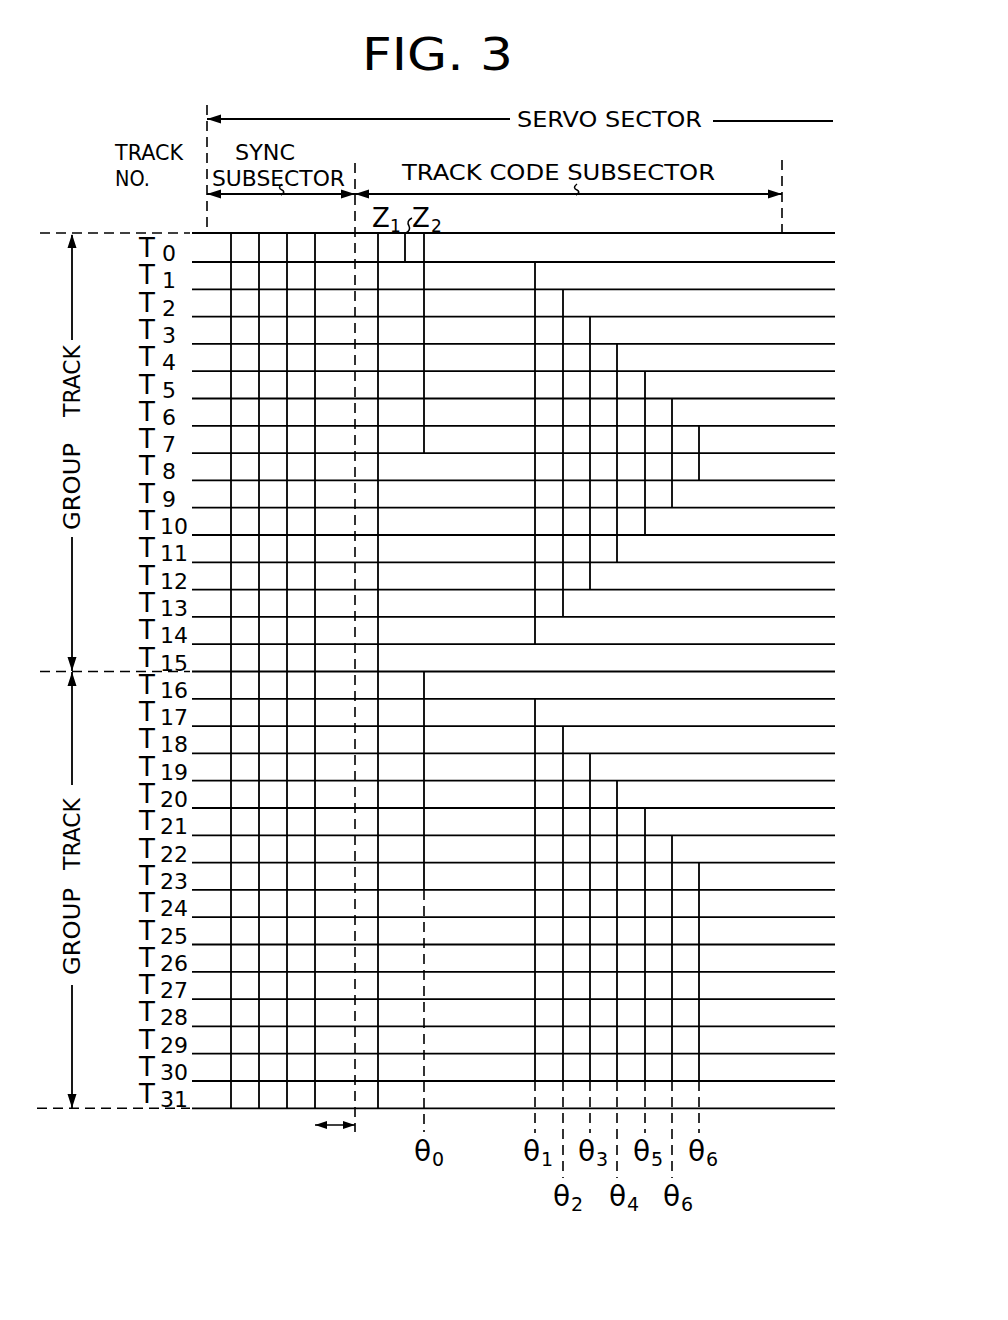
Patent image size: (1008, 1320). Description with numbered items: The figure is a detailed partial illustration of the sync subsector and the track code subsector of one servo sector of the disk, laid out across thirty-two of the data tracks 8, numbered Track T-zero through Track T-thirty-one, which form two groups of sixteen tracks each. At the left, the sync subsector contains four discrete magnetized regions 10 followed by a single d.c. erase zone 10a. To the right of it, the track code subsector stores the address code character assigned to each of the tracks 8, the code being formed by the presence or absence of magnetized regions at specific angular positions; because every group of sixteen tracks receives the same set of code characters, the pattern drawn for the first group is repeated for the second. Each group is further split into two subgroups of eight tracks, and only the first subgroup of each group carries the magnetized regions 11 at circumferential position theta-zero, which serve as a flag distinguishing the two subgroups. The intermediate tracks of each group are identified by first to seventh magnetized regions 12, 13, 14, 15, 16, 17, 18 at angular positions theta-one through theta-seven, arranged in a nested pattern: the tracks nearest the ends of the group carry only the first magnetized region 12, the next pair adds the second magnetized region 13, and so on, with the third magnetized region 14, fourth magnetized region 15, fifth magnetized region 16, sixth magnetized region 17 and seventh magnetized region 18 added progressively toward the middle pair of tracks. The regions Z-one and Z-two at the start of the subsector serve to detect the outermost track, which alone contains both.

The data tracks 8 is at (835, 262).
The magnetized regions of the sync subsector 10 is at (231, 1094).
The d.c. erase zone 10a is at (335, 1125).
The magnetized regions 11 is at (424, 441).
The first magnetized region 12 is at (535, 633).
The second magnetized region 13 is at (563, 606).
The third magnetized region 14 is at (590, 578).
The fourth magnetized region 15 is at (617, 552).
The fifth magnetized region 16 is at (645, 525).
The sixth magnetized region 17 is at (672, 497).
The seventh magnetized region 18 is at (699, 468).